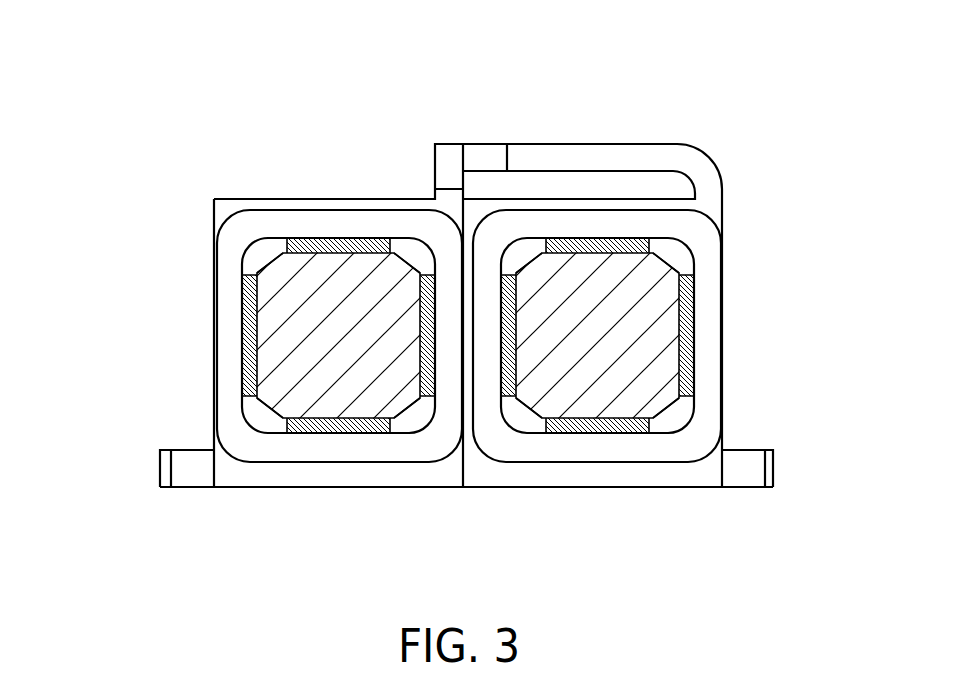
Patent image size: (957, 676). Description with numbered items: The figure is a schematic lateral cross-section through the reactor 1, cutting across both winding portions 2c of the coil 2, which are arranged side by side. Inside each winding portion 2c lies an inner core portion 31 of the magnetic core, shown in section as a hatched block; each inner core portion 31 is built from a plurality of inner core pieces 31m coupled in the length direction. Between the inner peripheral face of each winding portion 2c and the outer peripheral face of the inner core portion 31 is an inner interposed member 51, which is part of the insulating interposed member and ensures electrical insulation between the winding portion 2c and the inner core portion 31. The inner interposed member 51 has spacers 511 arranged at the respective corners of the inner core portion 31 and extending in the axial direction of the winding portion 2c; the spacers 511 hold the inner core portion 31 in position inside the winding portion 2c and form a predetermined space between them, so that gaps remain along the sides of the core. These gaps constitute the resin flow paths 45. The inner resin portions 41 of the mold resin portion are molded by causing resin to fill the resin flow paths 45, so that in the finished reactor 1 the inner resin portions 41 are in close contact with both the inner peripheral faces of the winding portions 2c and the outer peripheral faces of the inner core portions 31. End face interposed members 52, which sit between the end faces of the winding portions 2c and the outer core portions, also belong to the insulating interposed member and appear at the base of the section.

The reactor 1 is at (205, 106).
The coil 2 is at (216, 199).
The winding portion 2c is at (350, 199).
The inner core portion 31 is at (462, 335).
The inner core piece 31m is at (275, 300).
The inner resin portion 41 is at (352, 237).
The resin flow path 45 is at (283, 262).
The inner interposed member 51 is at (195, 460).
The spacer 511 is at (412, 245).
The end face interposed member 52 is at (232, 480).